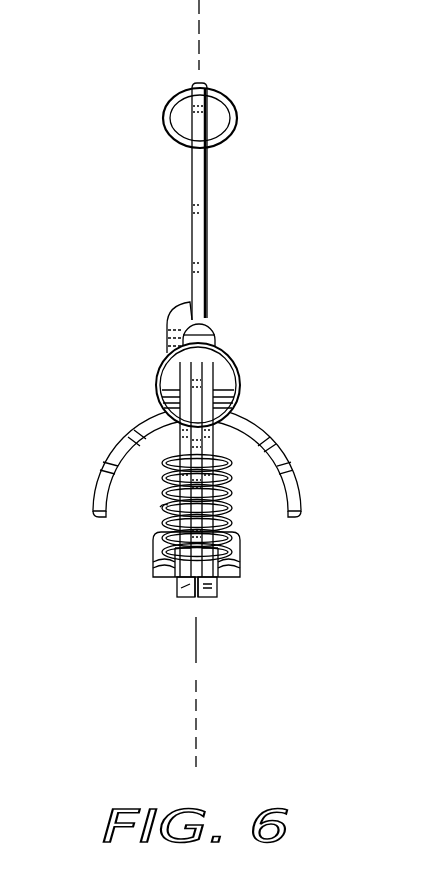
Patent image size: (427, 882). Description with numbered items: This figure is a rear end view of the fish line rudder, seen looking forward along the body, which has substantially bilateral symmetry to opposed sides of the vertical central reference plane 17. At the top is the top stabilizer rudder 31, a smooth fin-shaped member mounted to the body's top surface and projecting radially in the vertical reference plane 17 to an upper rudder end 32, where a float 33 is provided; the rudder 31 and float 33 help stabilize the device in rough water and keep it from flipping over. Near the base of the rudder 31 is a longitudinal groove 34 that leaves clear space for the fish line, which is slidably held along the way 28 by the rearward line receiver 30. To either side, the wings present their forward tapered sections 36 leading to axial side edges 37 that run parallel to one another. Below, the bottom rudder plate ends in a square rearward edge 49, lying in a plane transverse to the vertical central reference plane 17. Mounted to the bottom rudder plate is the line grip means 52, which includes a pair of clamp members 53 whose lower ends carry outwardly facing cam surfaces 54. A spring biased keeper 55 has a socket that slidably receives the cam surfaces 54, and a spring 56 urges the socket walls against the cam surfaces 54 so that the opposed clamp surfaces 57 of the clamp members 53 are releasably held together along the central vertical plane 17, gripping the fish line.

The vertical central reference plane 17 is at (197, 36).
The way 28 is at (201, 333).
The rearward line receiver 30 is at (206, 343).
The top stabilizer rudder 31 is at (198, 234).
The upper rudder end 32 is at (192, 180).
The float 33 is at (220, 115).
The longitudinal groove 34 is at (185, 318).
The forward tapered sections 36 is at (118, 449).
The axial side edges 37 is at (96, 514).
The square rearward edge 49 is at (197, 508).
The line grip means 52 is at (140, 568).
The clamp members 53 is at (175, 432).
The cam surfaces 54 is at (176, 585).
The spring biased keeper 55 is at (231, 568).
The spring 56 is at (165, 508).
The clamp surfaces 57 is at (207, 598).